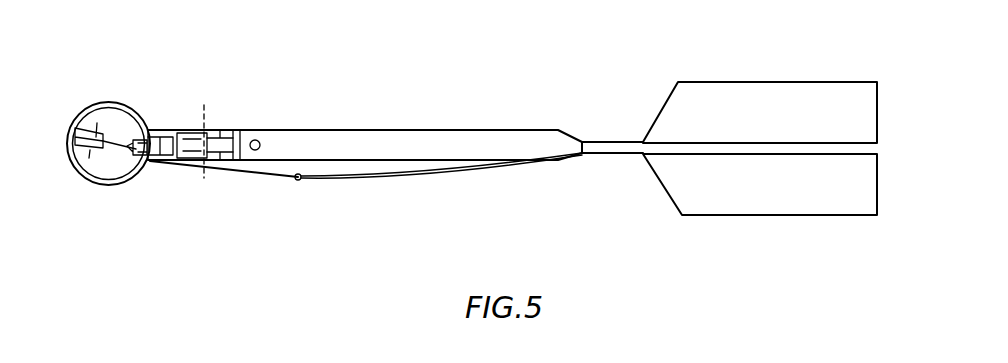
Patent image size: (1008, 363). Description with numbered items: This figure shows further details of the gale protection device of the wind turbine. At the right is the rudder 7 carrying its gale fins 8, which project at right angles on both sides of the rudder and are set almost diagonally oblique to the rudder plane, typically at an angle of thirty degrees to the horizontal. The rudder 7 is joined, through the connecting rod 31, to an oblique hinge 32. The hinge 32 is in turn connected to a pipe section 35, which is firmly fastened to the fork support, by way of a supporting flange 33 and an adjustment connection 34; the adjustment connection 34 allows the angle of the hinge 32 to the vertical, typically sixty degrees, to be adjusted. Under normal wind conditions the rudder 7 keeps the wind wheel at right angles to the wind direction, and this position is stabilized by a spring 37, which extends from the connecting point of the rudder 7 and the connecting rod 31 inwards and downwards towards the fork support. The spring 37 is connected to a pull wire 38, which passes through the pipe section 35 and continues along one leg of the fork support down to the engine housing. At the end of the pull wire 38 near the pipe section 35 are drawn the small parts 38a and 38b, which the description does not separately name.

The rudder 7 is at (742, 152).
The gale fins 8 is at (752, 96).
The connecting rod 31 is at (400, 138).
The oblique hinge 32 is at (236, 132).
The supporting flange 33 is at (165, 162).
The adjustment connection 34 is at (185, 130).
The pipe section 35 is at (112, 101).
The spring 37 is at (436, 176).
The pull wire 38 is at (268, 176).
The cord fitting 38a is at (135, 156).
The cord plug 38b is at (103, 152).